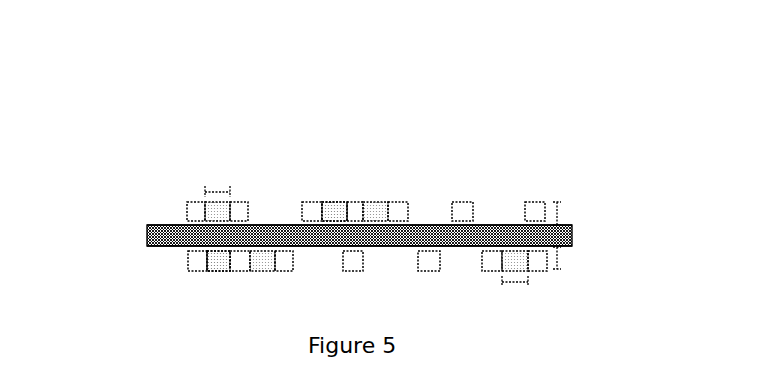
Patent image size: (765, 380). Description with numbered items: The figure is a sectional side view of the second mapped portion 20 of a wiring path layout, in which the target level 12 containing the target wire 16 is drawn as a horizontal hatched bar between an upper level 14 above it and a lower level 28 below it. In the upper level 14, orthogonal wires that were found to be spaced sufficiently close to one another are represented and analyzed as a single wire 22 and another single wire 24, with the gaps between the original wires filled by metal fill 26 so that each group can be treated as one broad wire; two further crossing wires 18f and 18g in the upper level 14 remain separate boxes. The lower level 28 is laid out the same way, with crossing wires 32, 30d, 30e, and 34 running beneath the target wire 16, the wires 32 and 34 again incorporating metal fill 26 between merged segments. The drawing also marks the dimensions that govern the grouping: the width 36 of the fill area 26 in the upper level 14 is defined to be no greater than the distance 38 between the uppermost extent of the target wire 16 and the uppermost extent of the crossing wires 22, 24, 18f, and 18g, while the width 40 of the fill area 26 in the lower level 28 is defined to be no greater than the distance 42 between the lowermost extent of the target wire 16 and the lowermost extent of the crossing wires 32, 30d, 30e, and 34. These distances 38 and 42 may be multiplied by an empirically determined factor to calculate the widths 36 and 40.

The second mapped portion 20 is at (394, 128).
The target level 12 is at (137, 232).
The upper level 14 is at (165, 202).
The distance 42 is at (565, 258).
The target wire 16 is at (573, 238).
The distance 38 is at (562, 215).
The single wire 22 is at (197, 202).
The width 36 is at (219, 185).
The single wire 24 is at (313, 202).
The metal fill 26 is at (332, 202).
The crossing wire 18f is at (460, 202).
The crossing wire 18g is at (533, 202).
The lower level 28 is at (170, 268).
The crossing wire 32 is at (207, 253).
The crossing wire 30d is at (345, 272).
The crossing wire 30e is at (427, 273).
The crossing wire 34 is at (532, 272).
The width 40 is at (517, 287).